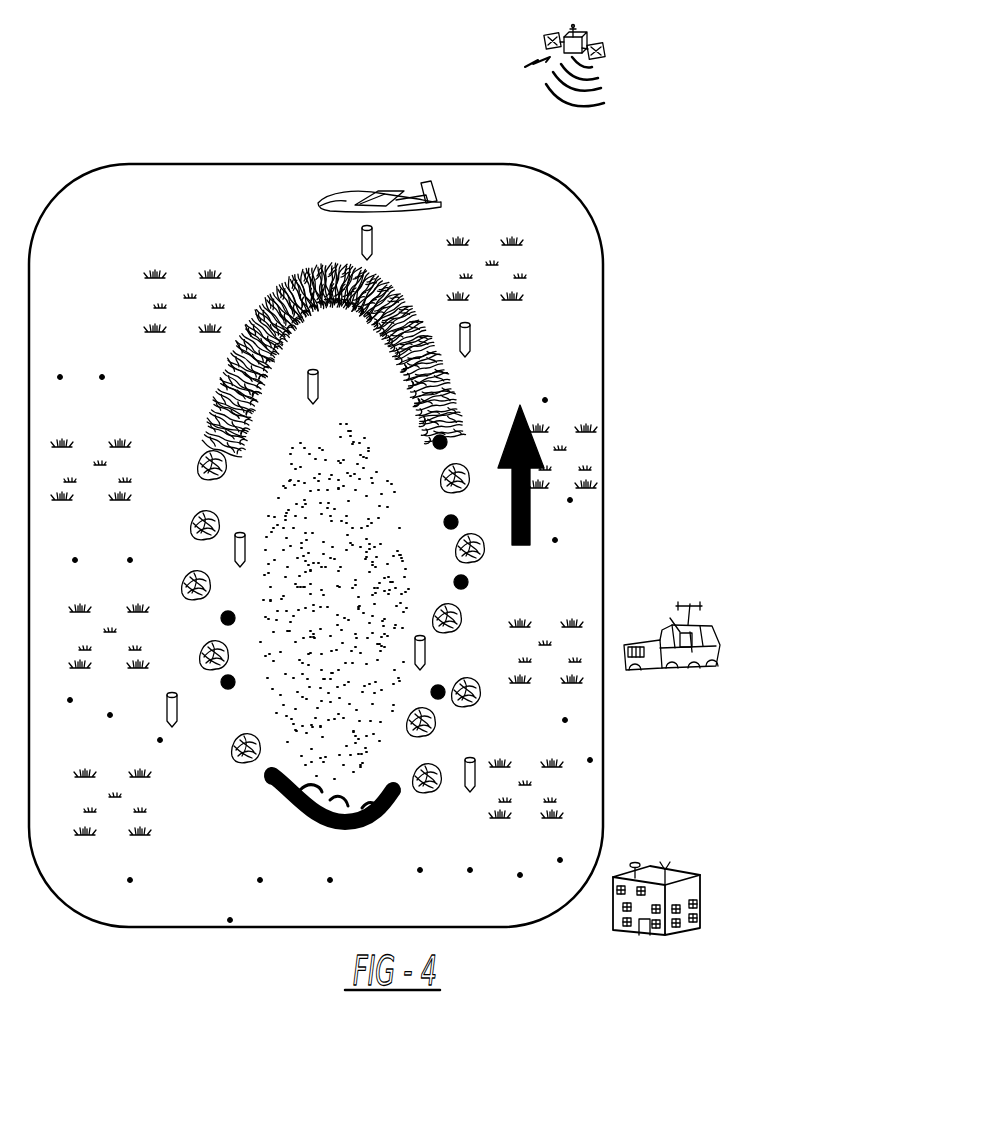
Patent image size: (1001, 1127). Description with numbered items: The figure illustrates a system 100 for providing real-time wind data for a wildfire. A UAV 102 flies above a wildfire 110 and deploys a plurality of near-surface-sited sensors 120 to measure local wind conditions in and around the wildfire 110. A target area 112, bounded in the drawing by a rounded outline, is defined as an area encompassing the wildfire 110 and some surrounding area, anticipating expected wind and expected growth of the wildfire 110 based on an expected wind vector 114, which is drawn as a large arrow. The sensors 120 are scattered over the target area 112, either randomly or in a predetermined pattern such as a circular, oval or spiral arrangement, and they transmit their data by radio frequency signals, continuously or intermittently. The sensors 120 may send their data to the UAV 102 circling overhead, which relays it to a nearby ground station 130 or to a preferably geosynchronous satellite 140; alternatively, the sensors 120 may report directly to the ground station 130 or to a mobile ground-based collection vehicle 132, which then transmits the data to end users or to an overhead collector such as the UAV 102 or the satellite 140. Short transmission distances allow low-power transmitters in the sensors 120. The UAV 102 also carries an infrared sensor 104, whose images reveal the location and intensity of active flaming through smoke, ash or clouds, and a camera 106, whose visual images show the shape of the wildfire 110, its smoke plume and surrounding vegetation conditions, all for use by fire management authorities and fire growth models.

The system 100 is at (72, 152).
The UAV 102 is at (312, 149).
The infrared sensor 104 is at (340, 213).
The camera 106 is at (320, 203).
The wildfire 110 is at (185, 372).
The target area 112 is at (603, 256).
The expected wind vector 114 is at (530, 490).
The near-surface-sited sensors 120 is at (373, 244).
The ground station 130 is at (633, 935).
The mobile ground-based collection vehicle 132 is at (660, 640).
The satellite 140 is at (590, 38).